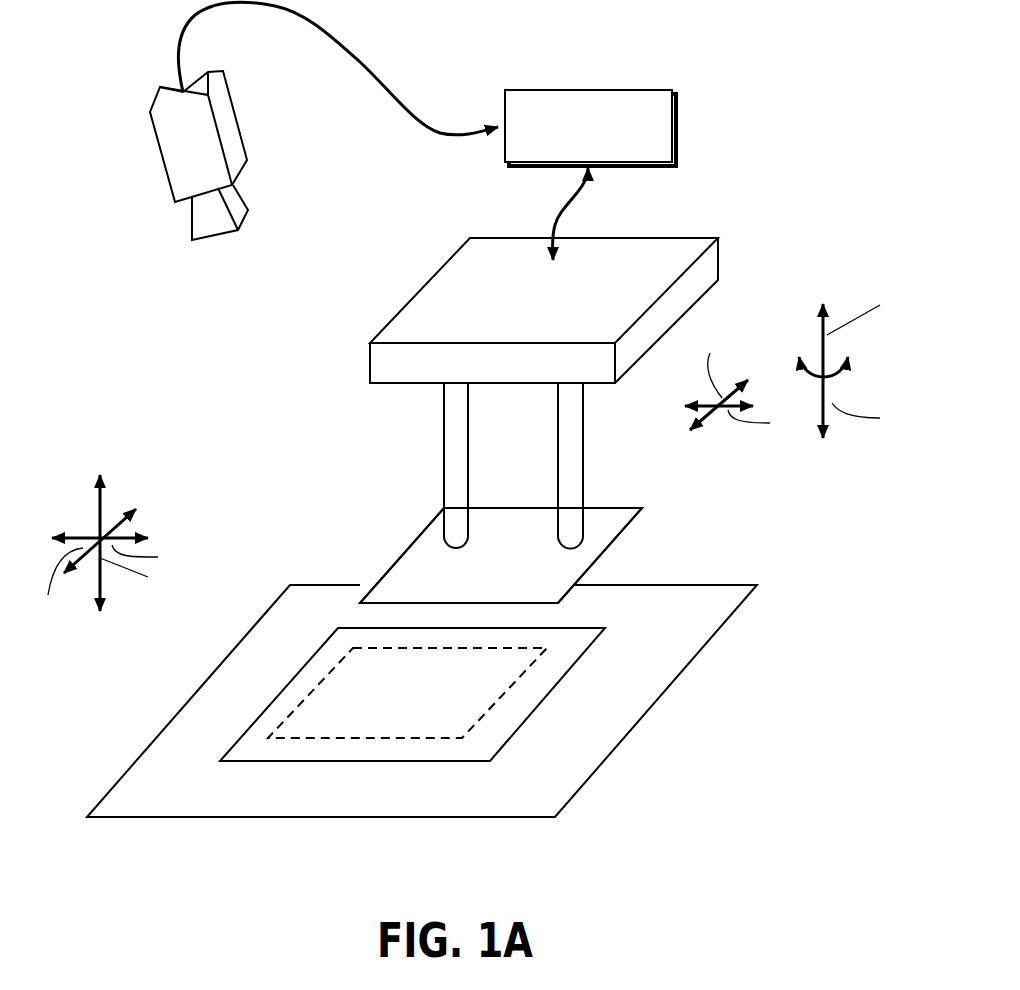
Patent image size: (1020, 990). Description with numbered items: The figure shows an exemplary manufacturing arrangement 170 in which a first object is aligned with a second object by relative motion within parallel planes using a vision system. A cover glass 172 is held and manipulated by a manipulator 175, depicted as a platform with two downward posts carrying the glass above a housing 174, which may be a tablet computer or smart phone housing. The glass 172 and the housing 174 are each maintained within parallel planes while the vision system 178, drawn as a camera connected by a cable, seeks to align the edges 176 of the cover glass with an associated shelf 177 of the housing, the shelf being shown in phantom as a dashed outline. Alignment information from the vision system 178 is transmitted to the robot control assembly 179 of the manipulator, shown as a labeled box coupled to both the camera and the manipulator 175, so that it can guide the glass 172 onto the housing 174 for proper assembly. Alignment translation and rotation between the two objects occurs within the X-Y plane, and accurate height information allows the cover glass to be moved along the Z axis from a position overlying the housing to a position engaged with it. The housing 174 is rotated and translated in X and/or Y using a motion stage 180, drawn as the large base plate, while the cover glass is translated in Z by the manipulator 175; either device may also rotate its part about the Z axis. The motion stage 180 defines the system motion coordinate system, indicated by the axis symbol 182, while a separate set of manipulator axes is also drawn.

The manufacturing arrangement 170 is at (762, 161).
The cover glass 172 is at (535, 523).
The housing 174 is at (532, 678).
The manipulator 175 is at (699, 273).
The edges of the cover glass 176 is at (414, 541).
The shelf 177 is at (487, 712).
The vision system 178 is at (232, 135).
The robot control assembly 179 is at (657, 102).
The motion stage 180 is at (697, 633).
The coordinate axes 182 is at (106, 507).